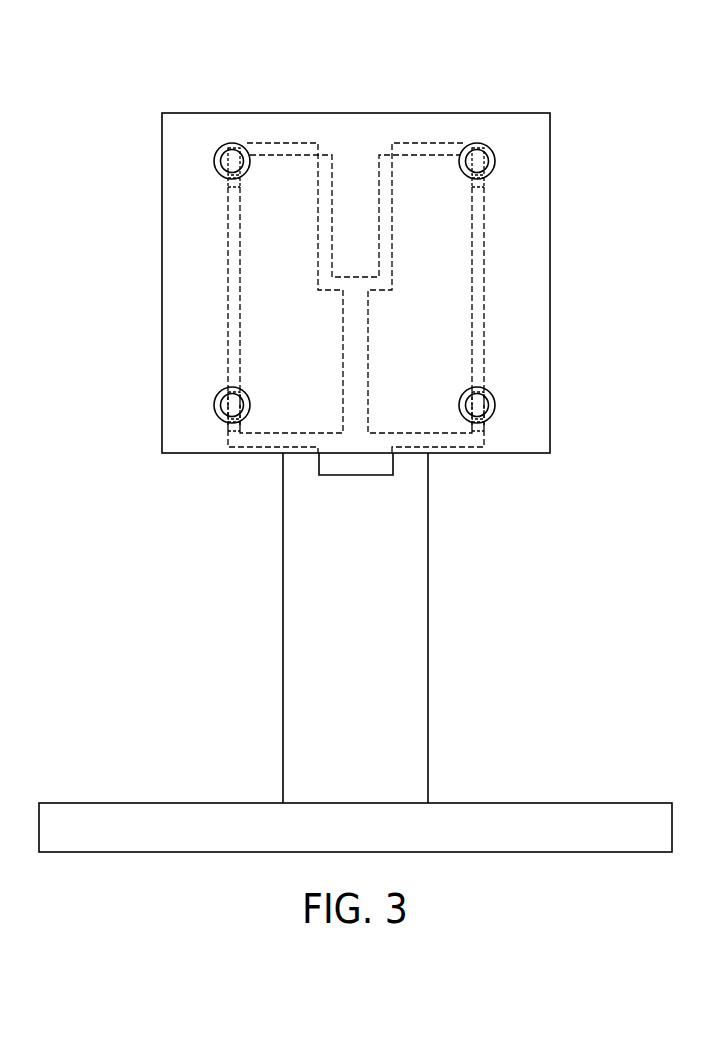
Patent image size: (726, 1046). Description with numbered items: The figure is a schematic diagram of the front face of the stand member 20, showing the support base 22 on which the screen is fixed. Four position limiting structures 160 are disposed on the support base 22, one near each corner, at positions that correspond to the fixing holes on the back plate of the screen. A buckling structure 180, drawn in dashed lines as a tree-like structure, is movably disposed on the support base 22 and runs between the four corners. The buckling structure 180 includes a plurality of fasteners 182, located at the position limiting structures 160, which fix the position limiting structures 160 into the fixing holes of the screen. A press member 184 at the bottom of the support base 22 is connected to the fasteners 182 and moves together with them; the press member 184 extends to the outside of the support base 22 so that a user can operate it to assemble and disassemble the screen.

The stand member 20 is at (136, 94).
The support base 22 is at (550, 248).
The position limiting structure 160 is at (495, 158).
The buckling structure 180 is at (408, 145).
The fastener 182 is at (235, 187).
The press member 184 is at (370, 463).